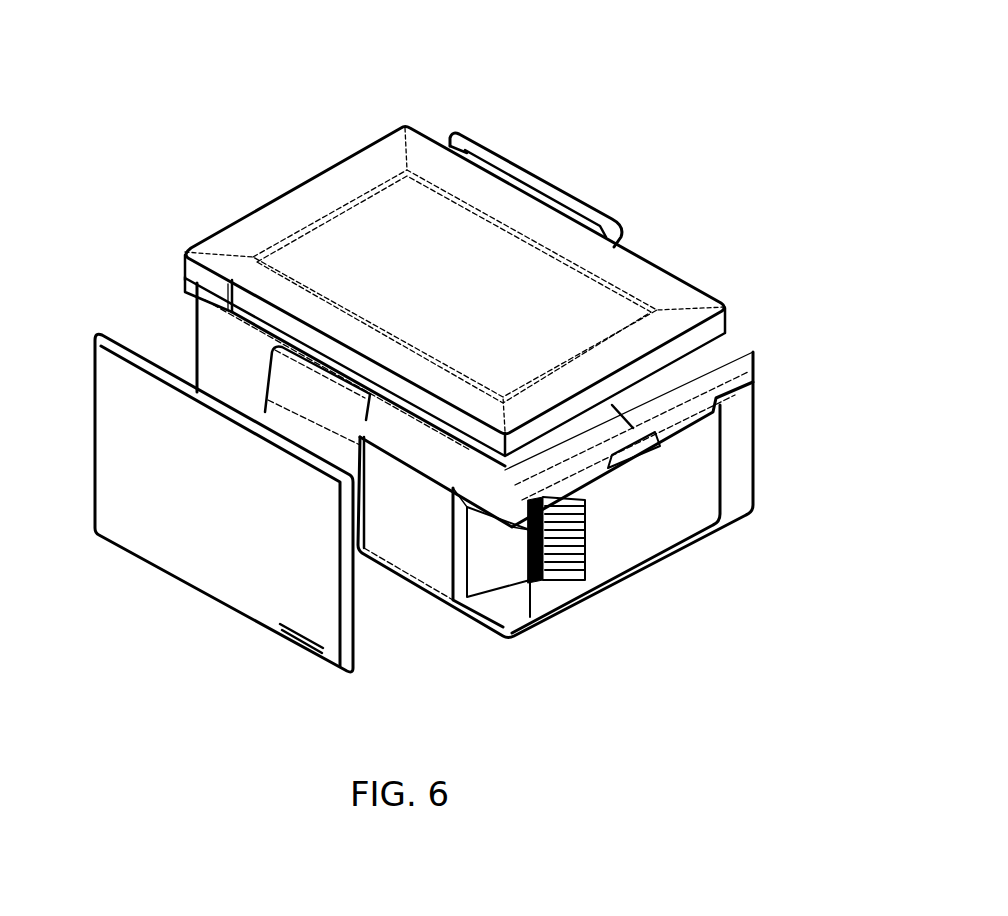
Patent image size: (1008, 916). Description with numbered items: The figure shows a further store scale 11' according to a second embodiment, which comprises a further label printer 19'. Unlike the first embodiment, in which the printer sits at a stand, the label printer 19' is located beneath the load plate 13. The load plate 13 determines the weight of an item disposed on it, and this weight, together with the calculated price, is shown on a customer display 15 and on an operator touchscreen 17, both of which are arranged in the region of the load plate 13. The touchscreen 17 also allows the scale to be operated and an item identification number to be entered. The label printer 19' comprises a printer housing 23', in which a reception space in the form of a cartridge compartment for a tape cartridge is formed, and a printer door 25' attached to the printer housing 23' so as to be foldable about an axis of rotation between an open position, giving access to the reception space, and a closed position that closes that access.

The store scale 11' is at (411, 262).
The load plate 13 is at (402, 220).
The customer display 15 is at (535, 170).
The operator touchscreen 17 is at (205, 530).
The label printer 19' is at (509, 542).
The printer housing 23' is at (419, 569).
The printer door 25' is at (648, 519).